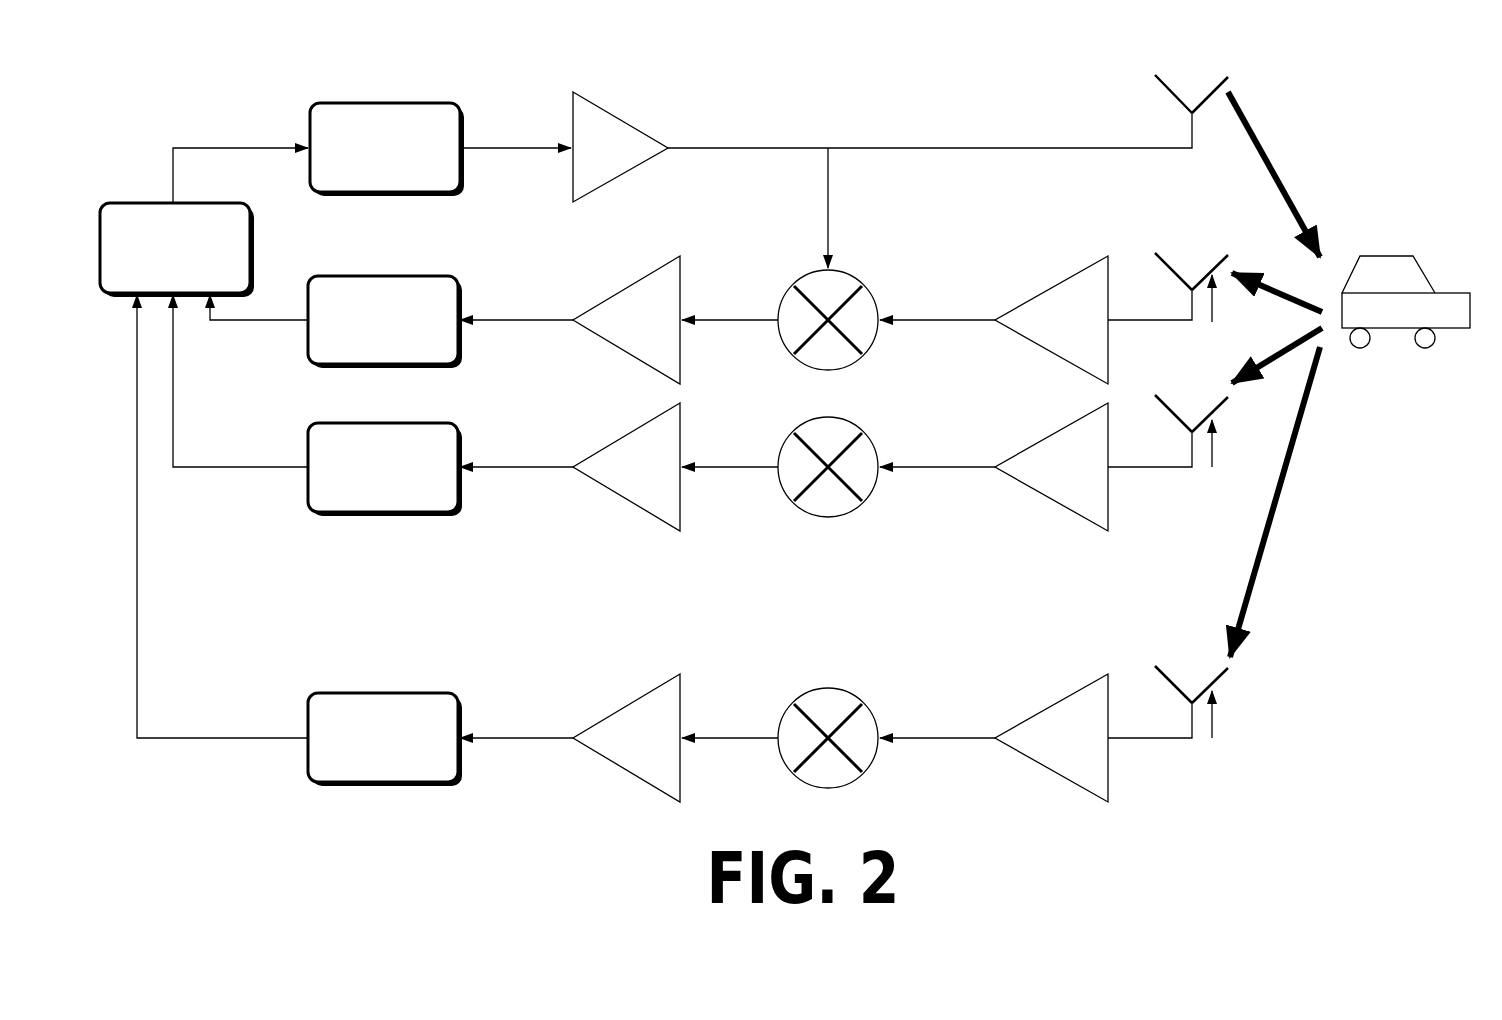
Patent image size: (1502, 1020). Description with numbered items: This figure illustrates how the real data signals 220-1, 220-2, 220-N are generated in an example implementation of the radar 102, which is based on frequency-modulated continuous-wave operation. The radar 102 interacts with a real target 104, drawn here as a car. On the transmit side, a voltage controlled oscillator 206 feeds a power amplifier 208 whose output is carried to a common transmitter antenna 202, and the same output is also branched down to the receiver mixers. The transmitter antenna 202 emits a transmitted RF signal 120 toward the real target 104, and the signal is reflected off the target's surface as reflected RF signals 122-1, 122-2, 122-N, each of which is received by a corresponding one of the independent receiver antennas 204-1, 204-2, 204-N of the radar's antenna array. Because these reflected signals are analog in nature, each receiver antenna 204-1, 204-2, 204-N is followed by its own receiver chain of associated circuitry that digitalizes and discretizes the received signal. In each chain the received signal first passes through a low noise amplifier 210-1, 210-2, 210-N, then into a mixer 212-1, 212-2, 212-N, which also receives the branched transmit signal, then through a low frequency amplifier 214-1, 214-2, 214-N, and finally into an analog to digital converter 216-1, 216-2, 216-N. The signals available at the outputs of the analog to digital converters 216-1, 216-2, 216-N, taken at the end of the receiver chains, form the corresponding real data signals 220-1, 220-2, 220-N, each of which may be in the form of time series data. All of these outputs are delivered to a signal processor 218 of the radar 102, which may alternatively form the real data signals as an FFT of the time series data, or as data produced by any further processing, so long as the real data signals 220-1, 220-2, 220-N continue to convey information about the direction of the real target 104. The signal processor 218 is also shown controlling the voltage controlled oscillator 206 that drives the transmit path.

The radar 102 is at (670, 58).
The real target 104 is at (1385, 252).
The transmitted RF signal 120 is at (1280, 170).
The reflected RF signal 122-1 is at (1291, 314).
The reflected RF signal 122-2 is at (1286, 369).
The reflected RF signal 122-N is at (1289, 475).
The transmitter antenna 202 is at (1191, 134).
The receiver antenna 204-1 is at (1192, 302).
The receiver antenna 204-2 is at (1192, 447).
The receiver antenna 204-N is at (1193, 721).
The voltage controlled oscillator (VCO) 206 is at (387, 149).
The power amplifier (PA) 208 is at (620, 147).
The low noise amplifier (LNA) 210-1 is at (1051, 320).
The low noise amplifier (LNA) 210-2 is at (1051, 467).
The low noise amplifier (LNA) 210-N is at (1051, 738).
The mixer 212-1 is at (855, 278).
The mixer 212-2 is at (855, 425).
The mixer 212-N is at (855, 700).
The low frequency amplifier (LFA) 214-1 is at (626, 320).
The low frequency amplifier (LFA) 214-2 is at (626, 467).
The low frequency amplifier (LFA) 214-N is at (626, 738).
The analog to digital converter (ADC) 216-1 is at (385, 322).
The analog to digital converter (ADC) 216-2 is at (385, 469).
The analog to digital converter (ADC) 216-N is at (385, 739).
The signal processor 218 is at (177, 250).
The real data signal 220-1 is at (232, 325).
The real data signal 220-2 is at (232, 472).
The real data signal 220-N is at (232, 743).